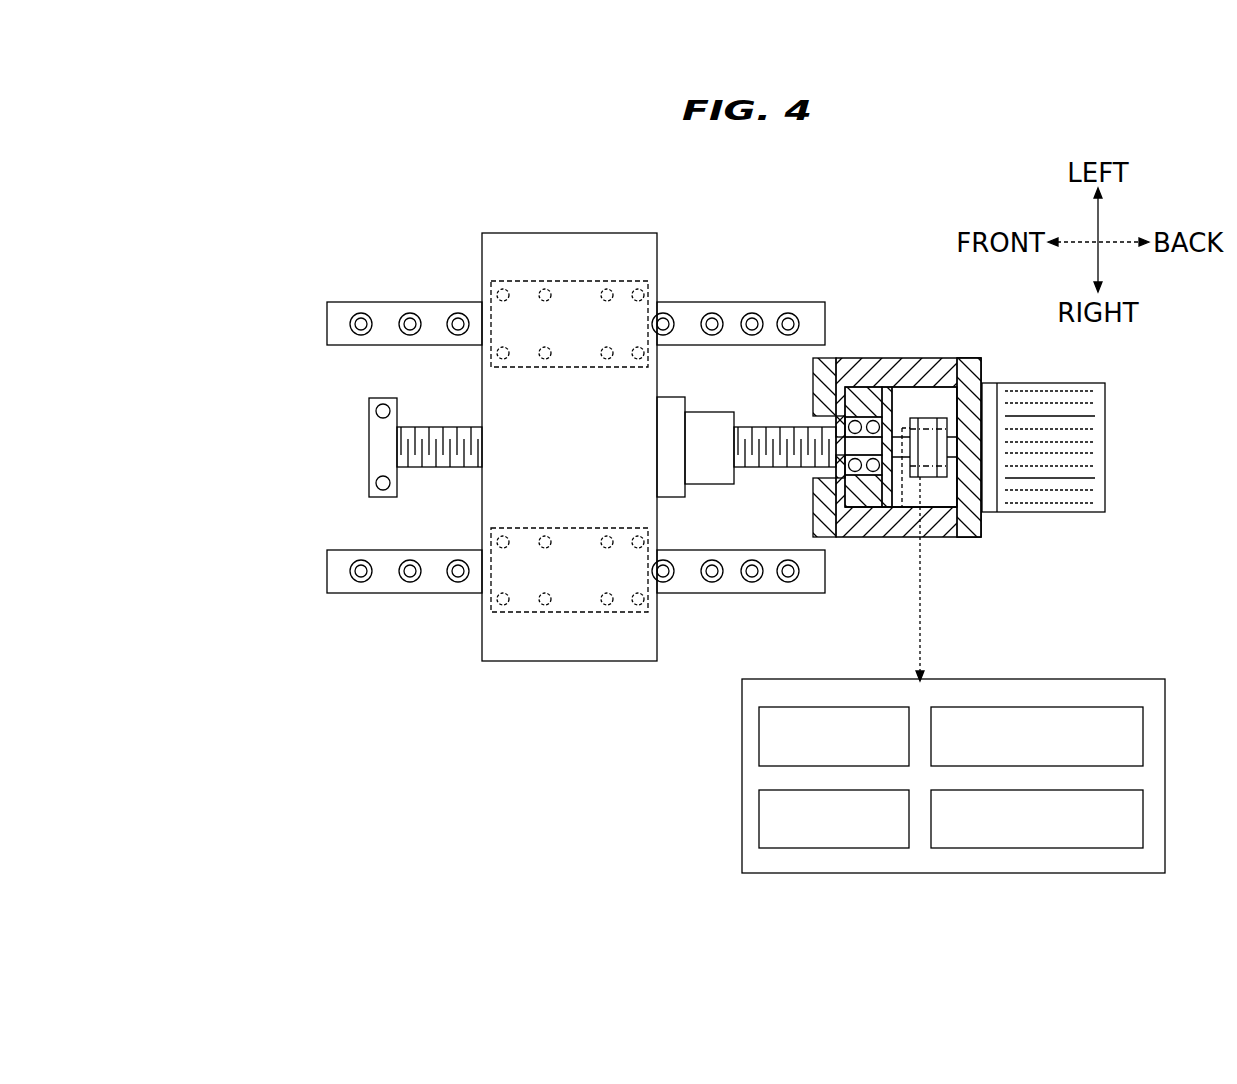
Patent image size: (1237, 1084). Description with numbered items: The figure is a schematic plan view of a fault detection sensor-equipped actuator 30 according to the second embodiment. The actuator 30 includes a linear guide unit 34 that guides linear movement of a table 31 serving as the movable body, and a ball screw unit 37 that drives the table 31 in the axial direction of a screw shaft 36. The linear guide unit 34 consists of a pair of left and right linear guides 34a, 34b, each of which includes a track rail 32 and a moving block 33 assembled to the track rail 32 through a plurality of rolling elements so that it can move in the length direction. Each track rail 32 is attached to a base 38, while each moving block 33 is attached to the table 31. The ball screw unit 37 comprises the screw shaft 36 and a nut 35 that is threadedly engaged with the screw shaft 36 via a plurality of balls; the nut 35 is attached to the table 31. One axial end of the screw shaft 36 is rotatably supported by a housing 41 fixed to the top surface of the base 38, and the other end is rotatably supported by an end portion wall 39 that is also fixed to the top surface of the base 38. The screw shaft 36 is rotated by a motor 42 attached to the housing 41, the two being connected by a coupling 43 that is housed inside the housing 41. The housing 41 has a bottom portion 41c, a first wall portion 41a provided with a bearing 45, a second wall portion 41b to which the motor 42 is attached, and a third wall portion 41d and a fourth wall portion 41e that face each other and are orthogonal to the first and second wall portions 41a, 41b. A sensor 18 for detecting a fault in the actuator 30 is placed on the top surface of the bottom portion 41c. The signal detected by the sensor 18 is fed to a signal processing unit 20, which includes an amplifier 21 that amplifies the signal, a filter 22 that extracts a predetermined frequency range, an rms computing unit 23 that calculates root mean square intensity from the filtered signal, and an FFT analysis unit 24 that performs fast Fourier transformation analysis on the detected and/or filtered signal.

The sensor 18 is at (908, 503).
The signal processing unit 20 is at (1165, 793).
The amplifier 21 is at (835, 707).
The filter 22 is at (864, 848).
The rms computing unit 23 is at (1040, 707).
The FFT analysis unit 24 is at (1053, 848).
The actuator 30 is at (890, 246).
The table 31 is at (657, 256).
The track rail 32 is at (429, 582).
The moving block 33 is at (546, 612).
The linear guide unit 34 is at (223, 320).
The linear guide 34a is at (322, 326).
The linear guide 34b is at (322, 577).
The nut 35 is at (677, 445).
The screw shaft 36 is at (757, 440).
The ball screw unit 37 is at (712, 387).
The base 38 is at (684, 530).
The end portion wall 39 is at (369, 450).
The housing 41 is at (877, 380).
The first wall portion 41a is at (821, 385).
The second wall portion 41b is at (967, 400).
The bottom portion 41c is at (937, 498).
The third wall portion 41d is at (887, 390).
The fourth wall portion 41e is at (877, 537).
The motor 42 is at (1080, 433).
The coupling 43 is at (928, 420).
The bearing 45 is at (863, 500).